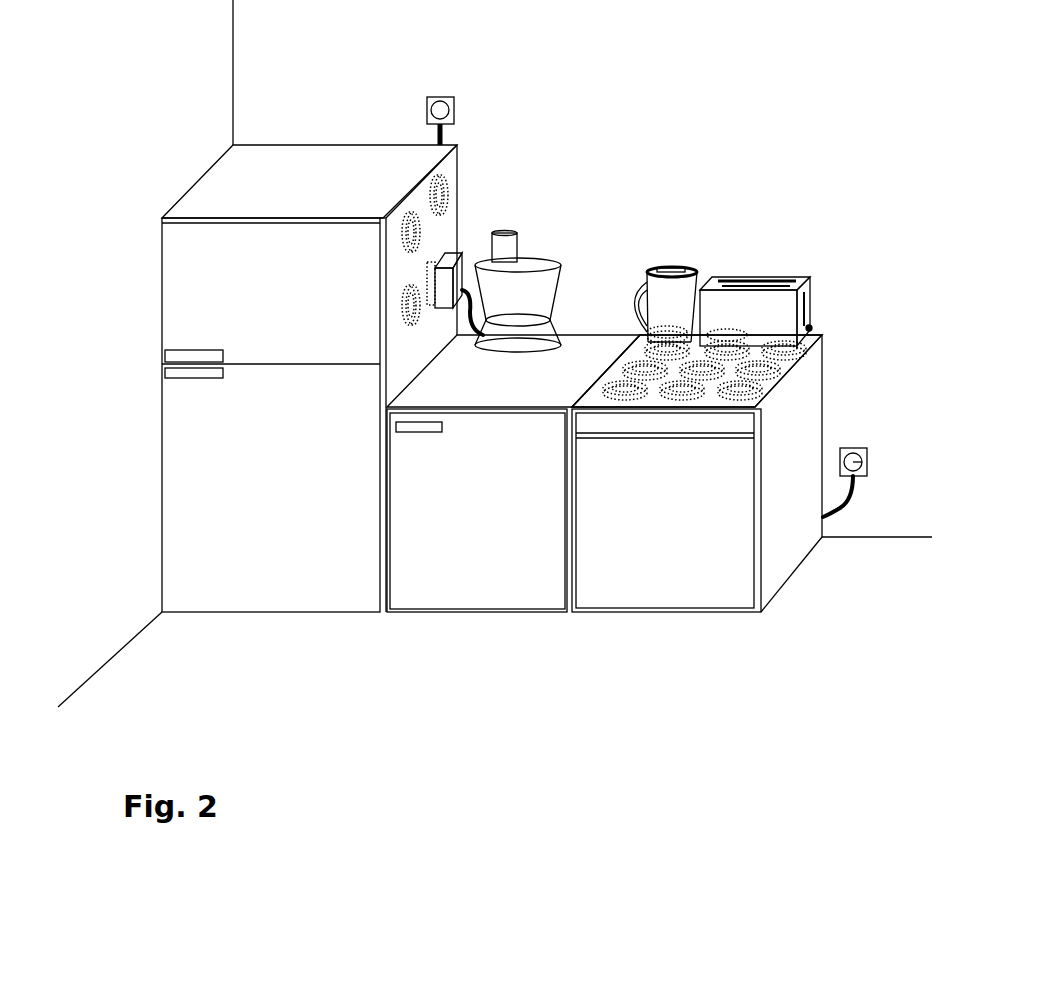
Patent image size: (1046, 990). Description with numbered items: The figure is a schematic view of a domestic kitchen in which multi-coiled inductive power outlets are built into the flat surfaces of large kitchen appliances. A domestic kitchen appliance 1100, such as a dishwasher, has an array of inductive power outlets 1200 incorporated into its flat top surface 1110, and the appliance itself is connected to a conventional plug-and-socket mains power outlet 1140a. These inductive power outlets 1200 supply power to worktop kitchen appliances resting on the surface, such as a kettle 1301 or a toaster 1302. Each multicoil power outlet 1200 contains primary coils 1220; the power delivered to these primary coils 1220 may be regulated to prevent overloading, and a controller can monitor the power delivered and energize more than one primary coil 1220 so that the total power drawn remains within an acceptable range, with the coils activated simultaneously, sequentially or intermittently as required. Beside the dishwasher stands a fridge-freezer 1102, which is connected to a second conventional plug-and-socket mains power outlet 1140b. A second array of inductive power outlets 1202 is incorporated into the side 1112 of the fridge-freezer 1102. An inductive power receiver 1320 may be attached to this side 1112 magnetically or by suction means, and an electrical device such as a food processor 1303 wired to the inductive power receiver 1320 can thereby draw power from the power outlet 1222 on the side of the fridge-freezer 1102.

The domestic kitchen appliance 1100 is at (653, 588).
The fridge-freezer 1102 is at (273, 583).
The flat top surface 1110 is at (590, 390).
The side 1112 is at (466, 212).
The plug-and-socket mains power outlet 1140a is at (862, 462).
The plug-and-socket mains power outlet 1140b is at (427, 110).
The array of inductive power outlets 1200 is at (780, 384).
The second array of inductive power outlets 1202 is at (404, 200).
The primary coil 1220 is at (727, 392).
The power outlet 1222 is at (431, 275).
The kettle 1301 is at (670, 268).
The toaster 1302 is at (800, 277).
The food processor 1303 is at (540, 268).
The inductive power receiver 1320 is at (441, 300).